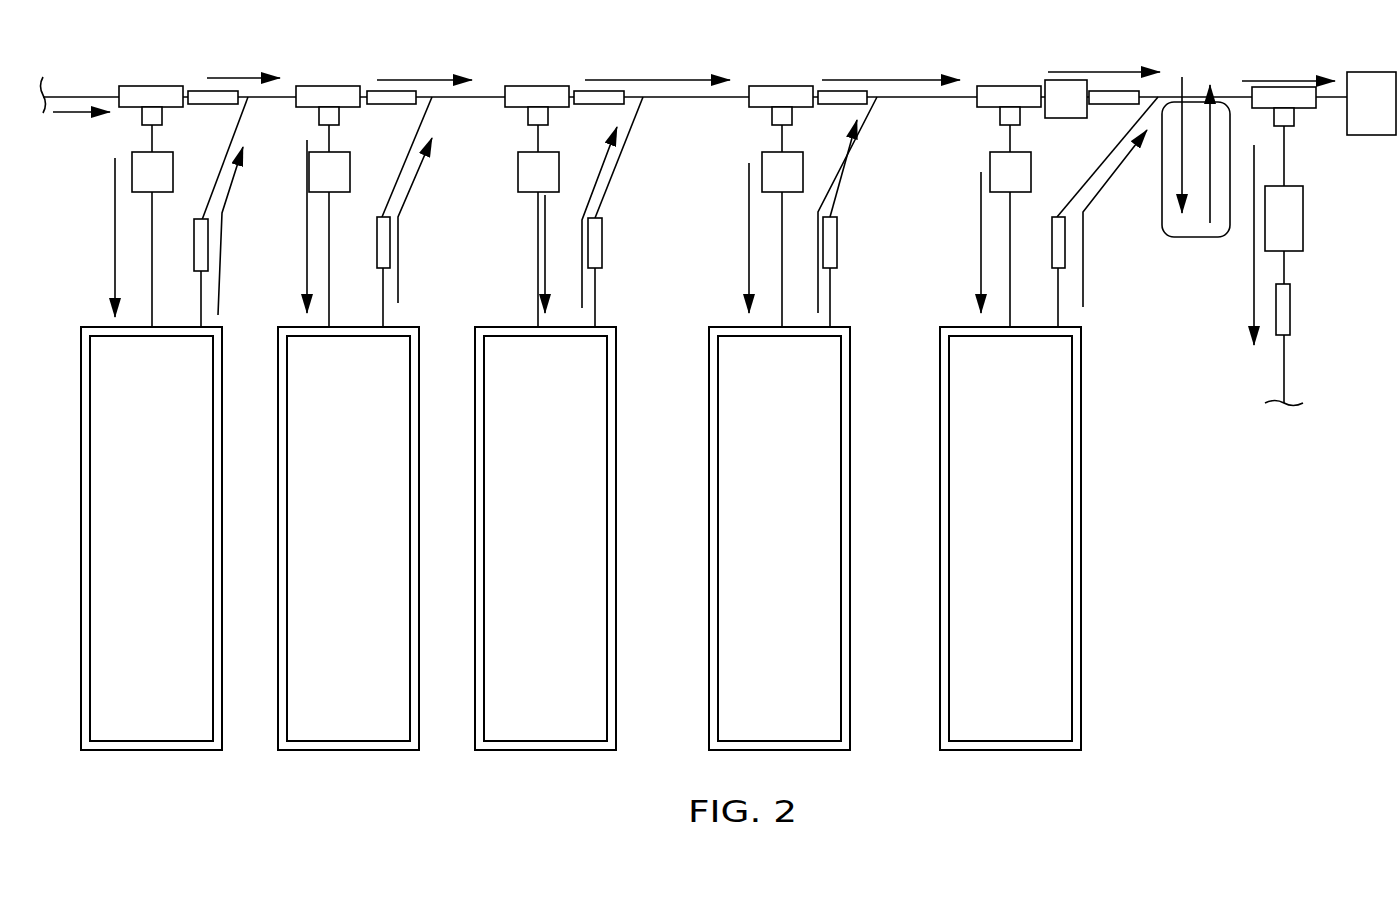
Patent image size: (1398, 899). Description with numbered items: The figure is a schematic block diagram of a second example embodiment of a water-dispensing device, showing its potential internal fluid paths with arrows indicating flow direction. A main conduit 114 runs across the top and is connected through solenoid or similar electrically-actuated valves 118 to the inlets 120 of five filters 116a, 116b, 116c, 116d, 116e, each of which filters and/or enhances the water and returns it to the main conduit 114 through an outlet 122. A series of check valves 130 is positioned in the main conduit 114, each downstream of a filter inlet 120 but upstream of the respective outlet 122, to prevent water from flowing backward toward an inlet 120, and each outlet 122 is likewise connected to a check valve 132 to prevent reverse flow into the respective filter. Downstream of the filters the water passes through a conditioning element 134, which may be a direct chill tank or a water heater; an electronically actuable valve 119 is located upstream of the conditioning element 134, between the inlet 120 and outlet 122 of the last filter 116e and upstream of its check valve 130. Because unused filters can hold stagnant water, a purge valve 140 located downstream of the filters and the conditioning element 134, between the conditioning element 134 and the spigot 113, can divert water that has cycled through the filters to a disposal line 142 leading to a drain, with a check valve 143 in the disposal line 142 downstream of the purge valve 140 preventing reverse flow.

The spigot 113 is at (1387, 120).
The main conduit 114 is at (82, 95).
The filter 116a is at (173, 570).
The filter 116b is at (370, 570).
The filter 116c is at (561, 570).
The filter 116d is at (798, 570).
The filter 116e is at (1028, 570).
The valve 118 is at (315, 173).
The valve 119 is at (1057, 80).
The inlet 120 is at (537, 237).
The outlet 122 is at (598, 303).
The check valve 130 is at (584, 90).
The check valve 132 is at (838, 241).
The conditioning element 134 is at (1193, 236).
The purge valve 140 is at (1305, 221).
The disposal line 142 is at (1285, 385).
The check valve 143 is at (1291, 310).